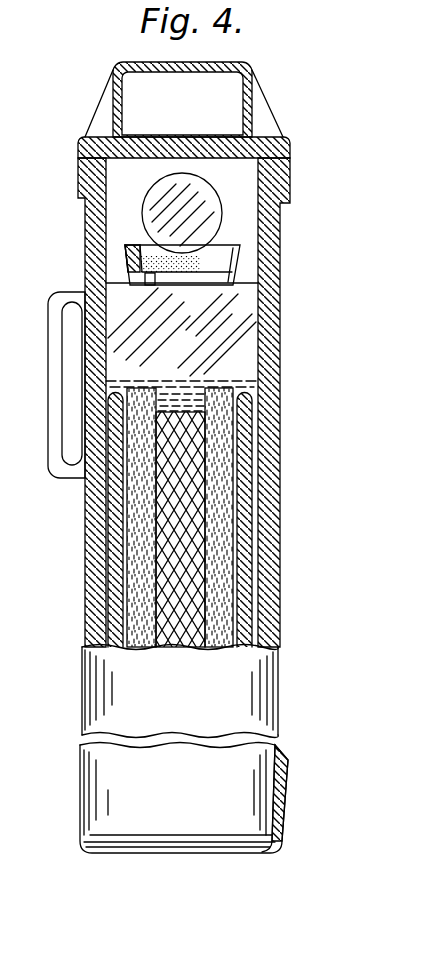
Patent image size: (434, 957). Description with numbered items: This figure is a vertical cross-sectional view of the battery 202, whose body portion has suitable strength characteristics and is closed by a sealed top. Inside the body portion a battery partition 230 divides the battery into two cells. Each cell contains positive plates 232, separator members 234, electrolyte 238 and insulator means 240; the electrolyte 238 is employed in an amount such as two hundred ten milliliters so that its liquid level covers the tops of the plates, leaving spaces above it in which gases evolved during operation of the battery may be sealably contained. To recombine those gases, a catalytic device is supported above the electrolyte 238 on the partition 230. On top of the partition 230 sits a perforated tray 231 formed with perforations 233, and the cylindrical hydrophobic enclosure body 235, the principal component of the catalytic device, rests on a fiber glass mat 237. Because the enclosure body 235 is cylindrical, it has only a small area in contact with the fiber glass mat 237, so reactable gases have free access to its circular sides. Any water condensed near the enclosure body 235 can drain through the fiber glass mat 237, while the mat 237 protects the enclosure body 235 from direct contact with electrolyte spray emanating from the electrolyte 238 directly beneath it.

The battery 202 is at (240, 707).
The battery partition 230 is at (243, 353).
The perforated tray 231 is at (224, 263).
The positive plates 232 is at (217, 468).
The perforations 233 is at (148, 286).
The separator members 234 is at (252, 510).
The hydrophobic enclosure body 235 is at (210, 200).
The fiber glass mat 237 is at (140, 247).
The electrolyte 238 is at (258, 385).
The insulator means 240 is at (258, 553).